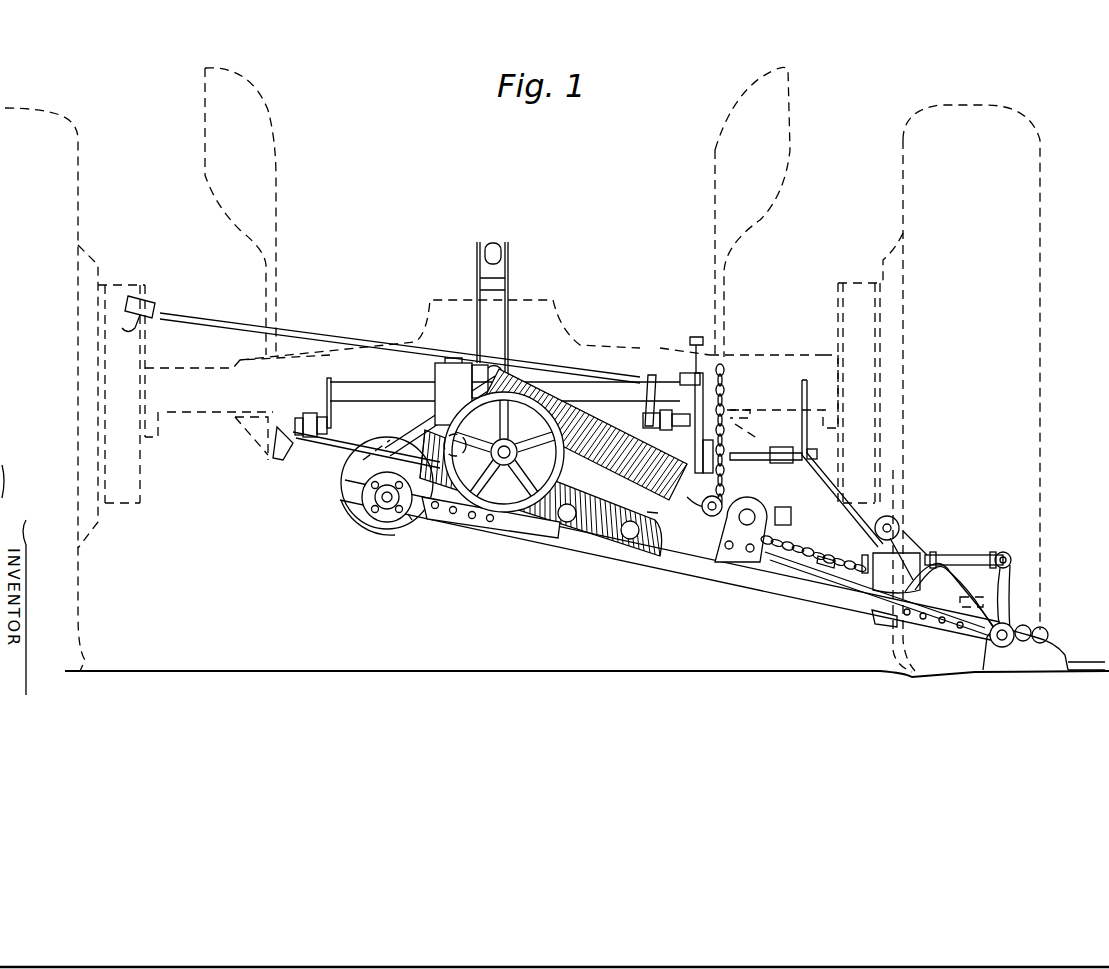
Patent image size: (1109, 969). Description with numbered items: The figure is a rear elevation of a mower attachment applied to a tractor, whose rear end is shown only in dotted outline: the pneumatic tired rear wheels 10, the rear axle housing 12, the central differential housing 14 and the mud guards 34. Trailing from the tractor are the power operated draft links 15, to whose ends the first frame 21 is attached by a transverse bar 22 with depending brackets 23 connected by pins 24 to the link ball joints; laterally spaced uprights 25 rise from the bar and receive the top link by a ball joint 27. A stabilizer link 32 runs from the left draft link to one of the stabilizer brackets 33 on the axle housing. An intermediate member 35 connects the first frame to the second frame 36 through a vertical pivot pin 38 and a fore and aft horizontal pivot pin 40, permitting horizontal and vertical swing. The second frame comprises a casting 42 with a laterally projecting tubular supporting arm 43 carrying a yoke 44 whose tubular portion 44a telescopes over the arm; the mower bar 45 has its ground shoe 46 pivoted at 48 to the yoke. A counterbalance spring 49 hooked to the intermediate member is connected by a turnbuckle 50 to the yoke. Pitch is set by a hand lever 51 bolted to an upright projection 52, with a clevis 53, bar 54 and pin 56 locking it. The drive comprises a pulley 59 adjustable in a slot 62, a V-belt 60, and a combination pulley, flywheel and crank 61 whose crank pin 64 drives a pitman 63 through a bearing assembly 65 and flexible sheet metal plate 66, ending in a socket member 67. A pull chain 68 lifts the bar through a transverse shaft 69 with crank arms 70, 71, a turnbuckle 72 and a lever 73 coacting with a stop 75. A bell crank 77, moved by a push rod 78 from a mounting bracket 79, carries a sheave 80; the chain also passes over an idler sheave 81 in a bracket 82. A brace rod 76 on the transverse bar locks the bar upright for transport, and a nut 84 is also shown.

The pneumatic tired rear wheels 10 is at (80, 177).
The rear axle housing 12 is at (192, 413).
The differential housing 14 is at (557, 312).
The draft links 15 is at (347, 440).
The first frame 21 is at (420, 360).
The transverse bar 22 is at (353, 382).
The depending brackets 23 is at (326, 398).
The pins 24 is at (296, 420).
The uprights 25 is at (502, 272).
The ball joint 27 is at (512, 295).
The stabilizer link 32 is at (283, 458).
The stabilizer brackets 33 is at (260, 461).
The mud guards 34 is at (275, 178).
The intermediate member 35 is at (436, 373).
The second frame 36 is at (652, 509).
The vertical pivot pin 38 is at (451, 362).
The horizontal pivot pin 40 is at (465, 448).
The casting 42 is at (605, 512).
The tubular supporting arm 43 is at (850, 612).
The yoke 44 is at (958, 593).
The tubular portion 44a is at (878, 628).
The mower bar 45 is at (1083, 655).
The ground shoe 46 is at (1030, 675).
The pivot 48 is at (1011, 644).
The counterbalance spring 49 is at (520, 387).
The turnbuckle 50 is at (827, 573).
The hand lever 51 is at (805, 380).
The upright projection 52 is at (912, 560).
The clevis 53 is at (786, 447).
The bar 54 is at (762, 454).
The pin 56 is at (806, 459).
The pulley 59 is at (520, 515).
The V-belt 60 is at (405, 421).
The combination pulley, flywheel and crank 61 is at (350, 484).
The slot 62 is at (504, 481).
The pitman 63 is at (566, 546).
The crank pin 64 is at (385, 503).
The bearing assembly 65 is at (403, 509).
The sheet metal plate 66 is at (457, 528).
The socket member 67 is at (1040, 628).
The pull chain 68 is at (818, 545).
The transverse shaft 69 is at (898, 520).
The crank arm 70 is at (910, 546).
The crank arm 71 is at (854, 554).
The turnbuckle 72 is at (1000, 553).
The lever 73 is at (1012, 580).
The stop 75 is at (985, 632).
The brace rod 76 is at (199, 322).
The bell crank 77 is at (695, 370).
The push rod 78 is at (691, 423).
The mounting bracket 79 is at (728, 500).
The sheave 80 is at (722, 372).
The idler sheave 81 is at (758, 508).
The bracket 82 is at (710, 517).
The nut 84 is at (791, 506).